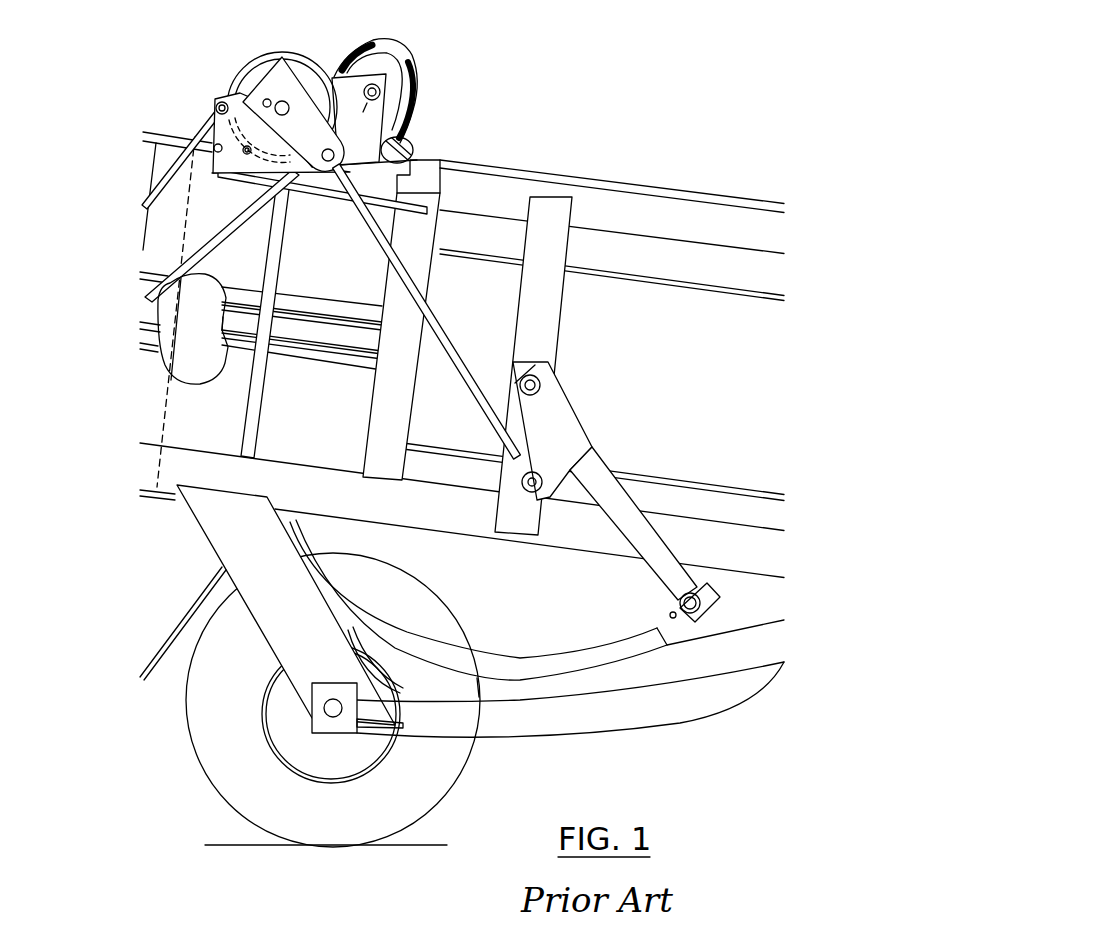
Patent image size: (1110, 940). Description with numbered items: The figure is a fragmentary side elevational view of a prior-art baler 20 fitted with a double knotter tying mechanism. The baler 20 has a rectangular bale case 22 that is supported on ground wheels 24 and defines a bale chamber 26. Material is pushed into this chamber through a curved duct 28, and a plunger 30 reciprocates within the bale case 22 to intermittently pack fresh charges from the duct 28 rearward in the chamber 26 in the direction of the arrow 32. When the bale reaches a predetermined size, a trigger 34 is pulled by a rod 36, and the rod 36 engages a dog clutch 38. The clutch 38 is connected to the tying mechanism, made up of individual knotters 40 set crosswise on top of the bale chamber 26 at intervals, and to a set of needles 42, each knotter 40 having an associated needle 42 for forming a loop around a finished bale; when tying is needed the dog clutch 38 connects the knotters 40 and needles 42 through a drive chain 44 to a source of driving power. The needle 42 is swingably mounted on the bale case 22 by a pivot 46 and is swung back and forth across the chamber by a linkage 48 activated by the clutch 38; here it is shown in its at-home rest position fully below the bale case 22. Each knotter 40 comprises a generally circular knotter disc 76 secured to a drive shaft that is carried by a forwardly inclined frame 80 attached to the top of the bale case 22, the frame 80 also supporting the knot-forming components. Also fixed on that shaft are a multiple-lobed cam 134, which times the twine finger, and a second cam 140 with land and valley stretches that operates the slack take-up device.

The baler 20 is at (462, 340).
The bale case 22 is at (657, 215).
The ground wheels 24 is at (450, 783).
The bale chamber 26 is at (208, 288).
The curved duct 28 is at (153, 652).
The plunger 30 is at (172, 380).
The arrow 32 is at (214, 324).
The trigger 34 is at (217, 124).
The rod 36 is at (309, 200).
The dog clutch 38 is at (279, 60).
The knotter 40 is at (394, 87).
The needle 42 is at (513, 645).
The drive chain 44 is at (222, 96).
The pivot 46 is at (548, 382).
The linkage 48 is at (446, 331).
The knotter disc 76 is at (426, 80).
The frame 80 is at (412, 128).
The multiple-lobed cam 134 is at (369, 30).
The second cam 140 is at (430, 105).